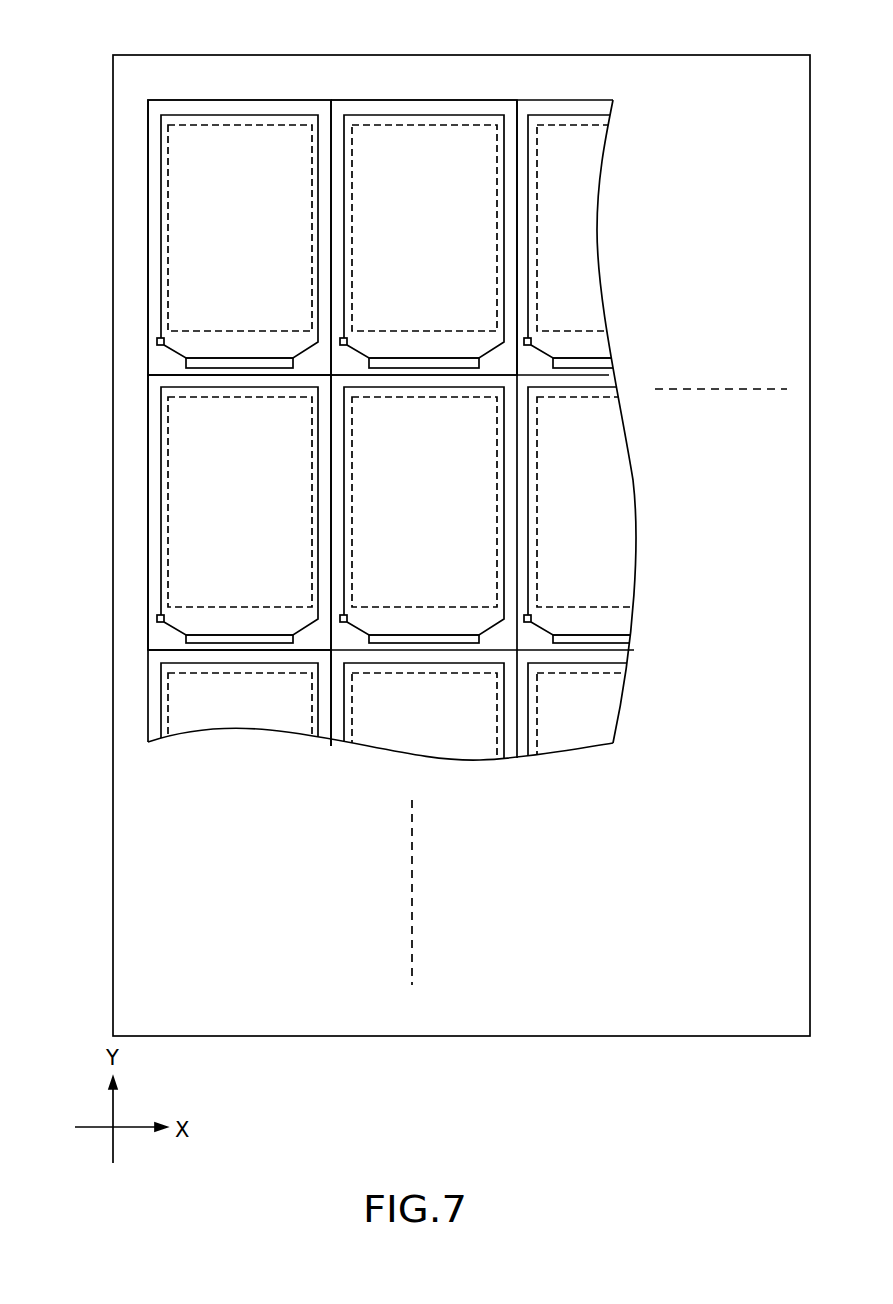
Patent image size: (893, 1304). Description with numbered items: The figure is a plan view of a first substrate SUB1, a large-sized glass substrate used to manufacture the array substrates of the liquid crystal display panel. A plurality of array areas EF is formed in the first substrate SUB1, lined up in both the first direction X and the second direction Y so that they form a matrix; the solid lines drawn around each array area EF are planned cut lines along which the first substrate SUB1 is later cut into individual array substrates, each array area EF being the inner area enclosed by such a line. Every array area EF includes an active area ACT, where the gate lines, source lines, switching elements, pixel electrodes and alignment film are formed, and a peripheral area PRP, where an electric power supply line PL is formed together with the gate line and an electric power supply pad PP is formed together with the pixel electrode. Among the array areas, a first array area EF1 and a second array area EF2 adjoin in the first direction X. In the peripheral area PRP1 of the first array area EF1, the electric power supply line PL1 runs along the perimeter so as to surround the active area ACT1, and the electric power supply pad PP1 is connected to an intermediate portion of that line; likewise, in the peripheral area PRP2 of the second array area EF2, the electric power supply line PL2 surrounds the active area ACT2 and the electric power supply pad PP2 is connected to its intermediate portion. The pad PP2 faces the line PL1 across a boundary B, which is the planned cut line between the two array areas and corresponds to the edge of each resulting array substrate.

The first substrate SUB1 is at (558, 50).
The boundary B is at (328, 172).
The first array area EF1 is at (205, 93).
The second array area EF2 is at (421, 92).
The array area EF is at (140, 539).
The electric power supply line PL1 is at (161, 189).
The electric power supply line PL2 is at (502, 116).
The electric power supply line PL is at (161, 433).
The active area ACT1 is at (168, 242).
The active area ACT2 is at (372, 125).
The active area ACT is at (168, 486).
The electric power supply pad PP1 is at (157, 342).
The electric power supply pad PP2 is at (349, 339).
The electric power supply pad PP is at (157, 618).
The peripheral area PRP1 is at (151, 366).
The peripheral area PRP2 is at (357, 372).
The peripheral area PRP is at (150, 640).